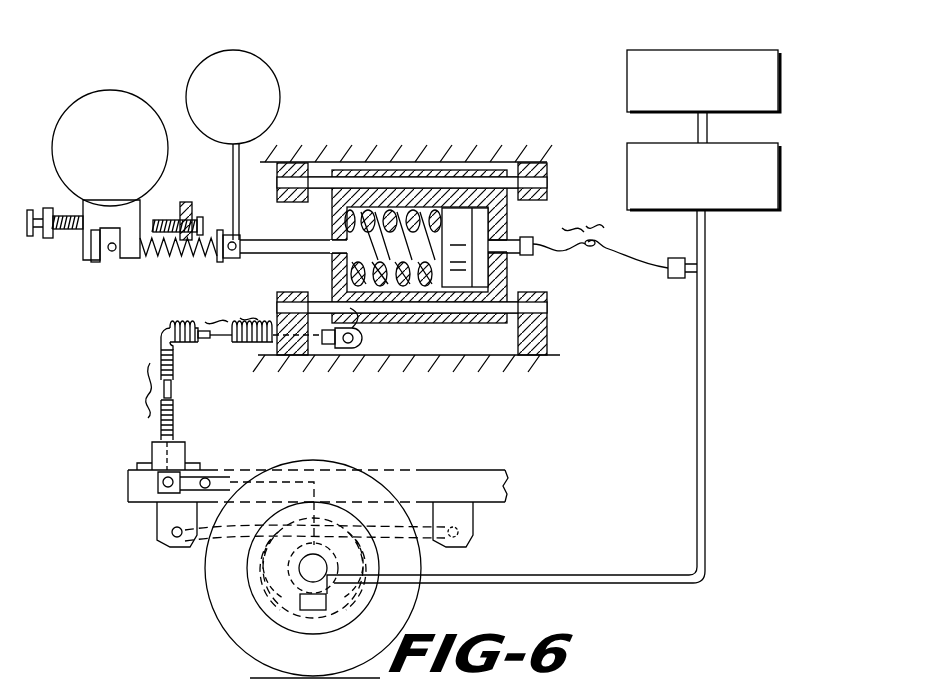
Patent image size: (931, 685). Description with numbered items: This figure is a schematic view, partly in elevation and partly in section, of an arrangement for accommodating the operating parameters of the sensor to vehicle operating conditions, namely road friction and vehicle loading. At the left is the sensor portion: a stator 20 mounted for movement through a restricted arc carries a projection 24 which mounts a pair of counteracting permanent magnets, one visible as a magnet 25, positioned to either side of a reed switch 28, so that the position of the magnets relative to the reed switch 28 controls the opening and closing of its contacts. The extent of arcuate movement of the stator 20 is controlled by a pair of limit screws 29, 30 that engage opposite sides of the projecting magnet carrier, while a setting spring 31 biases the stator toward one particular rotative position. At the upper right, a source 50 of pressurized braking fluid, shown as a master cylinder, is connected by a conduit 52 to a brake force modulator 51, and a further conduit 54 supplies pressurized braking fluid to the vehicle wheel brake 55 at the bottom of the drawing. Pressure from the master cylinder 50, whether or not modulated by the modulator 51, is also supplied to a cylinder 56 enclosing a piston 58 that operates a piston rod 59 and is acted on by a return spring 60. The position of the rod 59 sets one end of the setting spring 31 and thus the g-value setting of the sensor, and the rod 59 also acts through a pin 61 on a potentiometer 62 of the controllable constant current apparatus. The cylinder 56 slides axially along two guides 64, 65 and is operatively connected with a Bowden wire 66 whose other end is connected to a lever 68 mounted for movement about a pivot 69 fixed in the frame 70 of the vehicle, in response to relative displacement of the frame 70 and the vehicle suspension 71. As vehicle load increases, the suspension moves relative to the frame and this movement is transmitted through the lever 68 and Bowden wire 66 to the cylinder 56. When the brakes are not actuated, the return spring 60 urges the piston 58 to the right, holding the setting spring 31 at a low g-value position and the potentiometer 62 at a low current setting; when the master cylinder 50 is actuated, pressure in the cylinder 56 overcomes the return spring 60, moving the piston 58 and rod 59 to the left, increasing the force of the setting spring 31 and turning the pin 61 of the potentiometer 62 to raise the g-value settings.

The stator 20 is at (92, 92).
The projection 24 is at (132, 186).
The magnet 25 is at (92, 258).
The reed switch 28 is at (112, 252).
The limit screw 29 is at (58, 182).
The limit screw 30 is at (196, 216).
The setting spring 31 is at (178, 258).
The source of pressurized braking fluid 50 is at (627, 86).
The brake force modulator 51 is at (627, 186).
The conduit 52 is at (698, 130).
The conduit 54 is at (628, 262).
The vehicle wheel brake 55 is at (286, 610).
The cylinder 56 is at (428, 200).
The piston 58 is at (458, 227).
The piston rod 59 is at (292, 254).
The return spring 60 is at (355, 219).
The pin 61 is at (232, 168).
The potentiometer 62 is at (290, 62).
The guide 64 is at (317, 178).
The guide 65 is at (310, 296).
The Bowden wire 66 is at (176, 371).
The lever 68 is at (226, 477).
The pivot 69 is at (203, 473).
The frame 70 is at (424, 448).
The vehicle suspension 71 is at (193, 548).